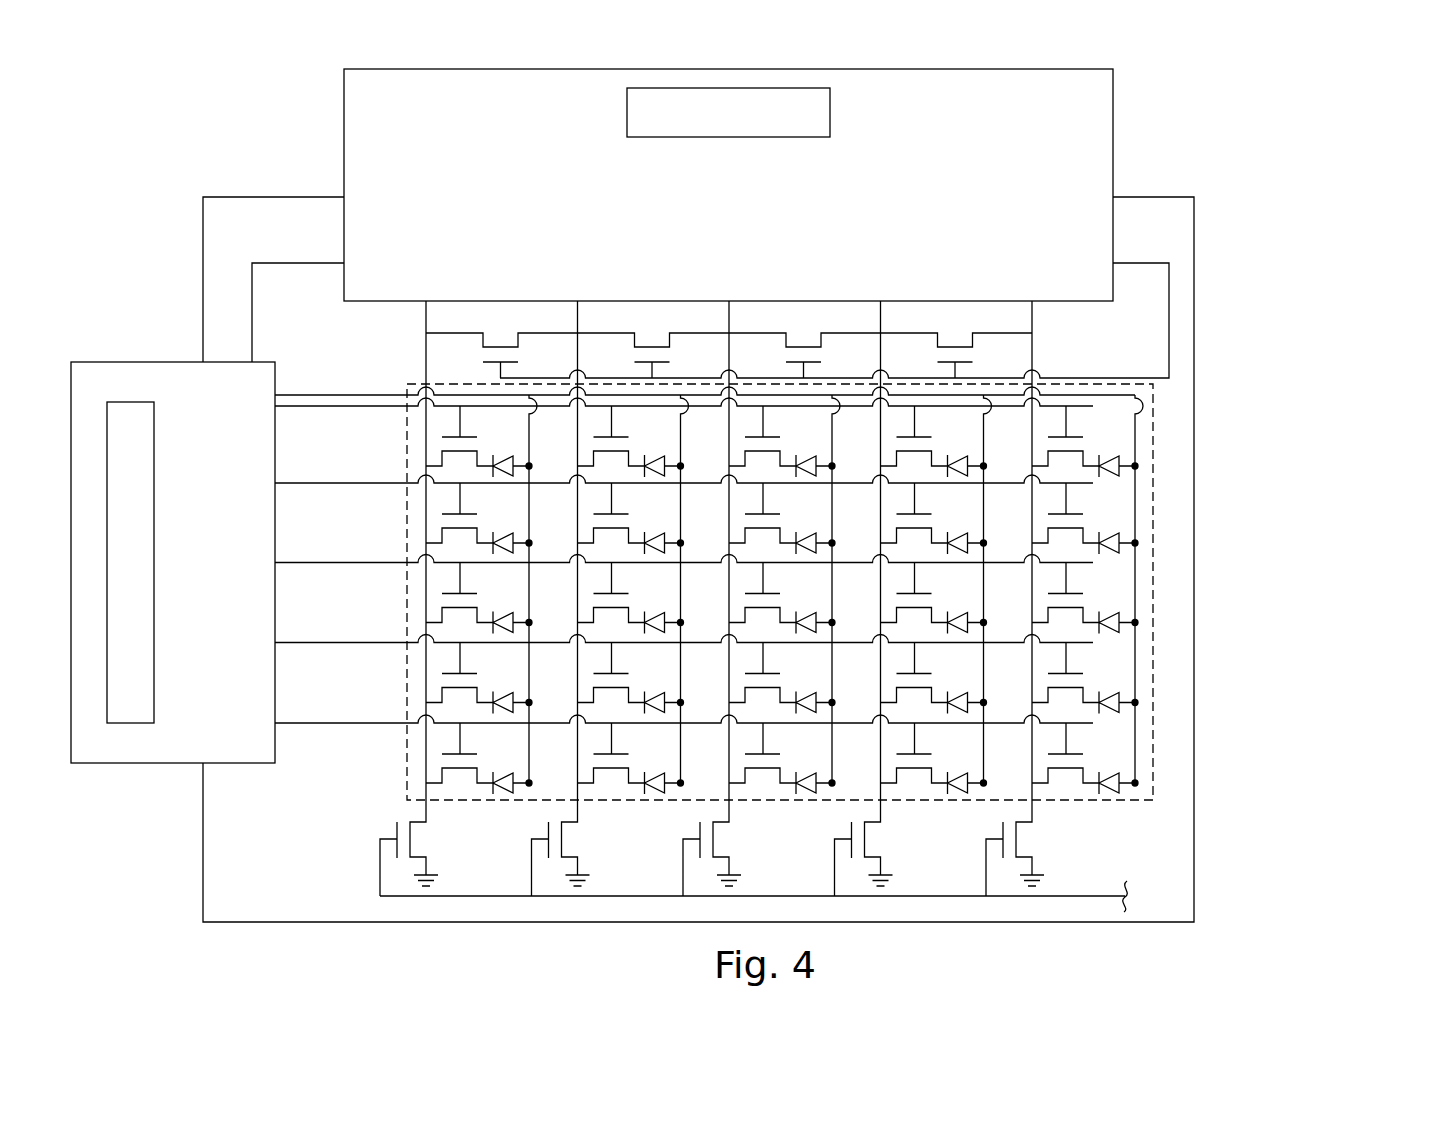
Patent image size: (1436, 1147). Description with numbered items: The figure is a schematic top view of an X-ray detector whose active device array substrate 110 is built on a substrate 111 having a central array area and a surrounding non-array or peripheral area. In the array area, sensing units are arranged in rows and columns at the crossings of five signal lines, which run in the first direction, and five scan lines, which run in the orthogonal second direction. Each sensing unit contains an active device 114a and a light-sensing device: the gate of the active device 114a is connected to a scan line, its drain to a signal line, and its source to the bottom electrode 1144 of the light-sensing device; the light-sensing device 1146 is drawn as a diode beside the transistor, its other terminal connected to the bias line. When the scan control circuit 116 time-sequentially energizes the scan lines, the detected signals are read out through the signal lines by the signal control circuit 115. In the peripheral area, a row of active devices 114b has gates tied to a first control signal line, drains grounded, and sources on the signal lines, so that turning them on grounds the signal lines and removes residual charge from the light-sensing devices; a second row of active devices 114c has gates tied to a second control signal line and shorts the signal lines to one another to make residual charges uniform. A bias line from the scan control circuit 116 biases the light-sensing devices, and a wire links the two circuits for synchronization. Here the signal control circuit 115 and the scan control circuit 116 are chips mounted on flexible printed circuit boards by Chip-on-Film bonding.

The active device array substrate 110 is at (107, 105).
The substrate 111 is at (1165, 233).
The signal control circuit 115 is at (708, 124).
The scan control circuit 116 is at (112, 575).
The active device 114a is at (1101, 615).
The active device 114b is at (427, 868).
The active device 114c is at (1007, 327).
The bottom electrode 1144 is at (1092, 463).
The light emitting diode of sub-pixel unit 1146 is at (1124, 466).